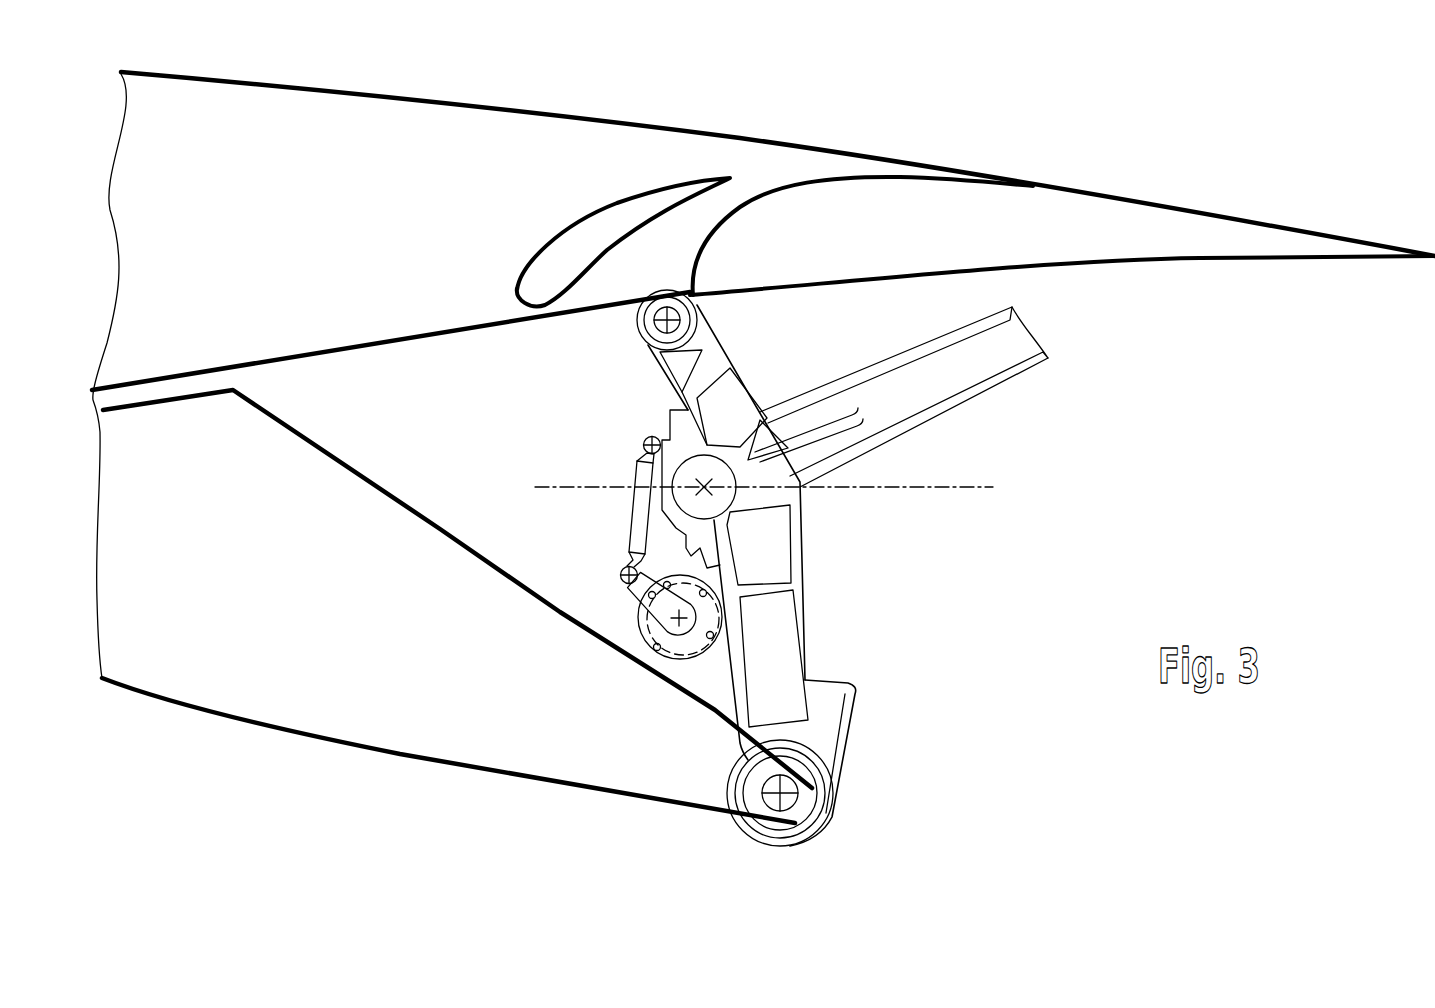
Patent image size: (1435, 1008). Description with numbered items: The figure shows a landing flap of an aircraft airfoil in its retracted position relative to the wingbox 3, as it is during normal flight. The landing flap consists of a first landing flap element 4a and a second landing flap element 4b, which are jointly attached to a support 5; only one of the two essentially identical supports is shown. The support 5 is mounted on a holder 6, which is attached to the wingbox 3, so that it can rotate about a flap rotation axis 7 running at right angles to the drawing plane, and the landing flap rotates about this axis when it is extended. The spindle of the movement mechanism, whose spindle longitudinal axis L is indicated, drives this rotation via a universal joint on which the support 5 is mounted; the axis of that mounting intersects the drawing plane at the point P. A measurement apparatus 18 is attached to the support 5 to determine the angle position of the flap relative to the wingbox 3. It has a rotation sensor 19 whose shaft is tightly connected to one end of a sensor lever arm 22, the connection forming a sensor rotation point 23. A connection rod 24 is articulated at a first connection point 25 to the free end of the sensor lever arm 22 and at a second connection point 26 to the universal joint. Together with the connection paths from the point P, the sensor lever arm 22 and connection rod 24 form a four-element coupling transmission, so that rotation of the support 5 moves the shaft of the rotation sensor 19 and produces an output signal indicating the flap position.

The wingbox 3 is at (420, 117).
The first landing flap element 4a is at (578, 233).
The second landing flap element 4b is at (1123, 213).
The support 5 is at (835, 748).
The holder 6 is at (537, 765).
The flap rotation axis 7 is at (833, 817).
The measurement apparatus 18 is at (598, 462).
The rotation sensor 19 is at (651, 640).
The sensor lever arm 22 is at (630, 594).
The sensor rotation point 23 is at (655, 655).
The connection rod 24 is at (633, 520).
The first connection point 25 is at (626, 568).
The second connection point 26 is at (646, 440).
The point P is at (700, 487).
The spindle longitudinal axis L is at (985, 490).